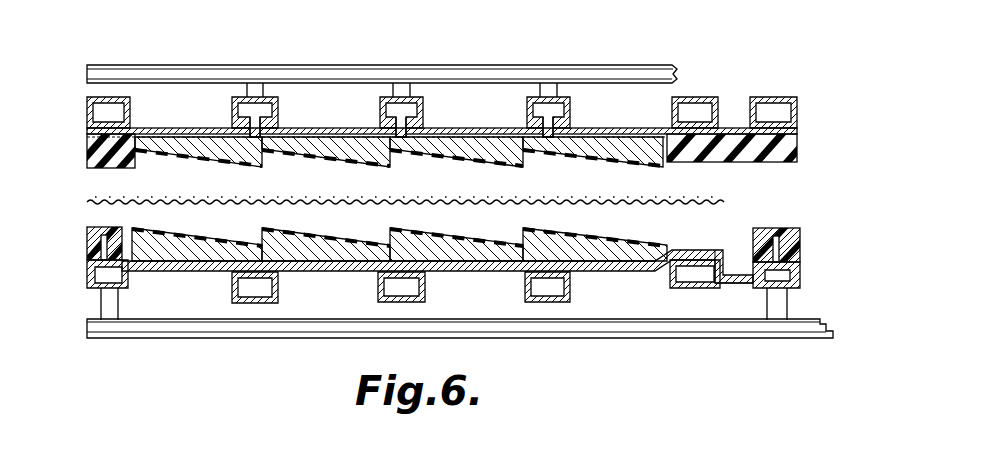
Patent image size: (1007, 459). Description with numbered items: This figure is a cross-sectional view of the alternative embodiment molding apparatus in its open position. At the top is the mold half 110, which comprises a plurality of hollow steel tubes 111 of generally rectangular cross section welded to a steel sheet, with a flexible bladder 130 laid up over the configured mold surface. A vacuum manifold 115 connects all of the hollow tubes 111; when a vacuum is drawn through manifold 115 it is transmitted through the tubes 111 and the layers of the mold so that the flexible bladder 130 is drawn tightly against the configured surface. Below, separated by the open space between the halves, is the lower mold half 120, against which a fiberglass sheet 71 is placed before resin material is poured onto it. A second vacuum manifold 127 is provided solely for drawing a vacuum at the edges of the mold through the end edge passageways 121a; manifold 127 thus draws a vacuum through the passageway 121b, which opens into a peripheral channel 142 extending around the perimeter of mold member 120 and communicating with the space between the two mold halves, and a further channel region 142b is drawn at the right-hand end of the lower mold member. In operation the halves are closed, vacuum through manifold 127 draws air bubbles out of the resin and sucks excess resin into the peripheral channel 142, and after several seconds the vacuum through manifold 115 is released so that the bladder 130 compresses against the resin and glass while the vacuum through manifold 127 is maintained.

The vacuum manifold 115 is at (313, 70).
The mold half 110 is at (425, 127).
The hollow steel tubes 111 is at (279, 114).
The flexible bladder 130 is at (447, 170).
The fiberglass sheet 71 is at (579, 193).
The peripheral channel 142 is at (128, 233).
The recess of lower wedge layer 142b is at (735, 229).
The passageway 121b is at (88, 243).
The end edge passageways 121a is at (88, 276).
The mold half 120 is at (454, 292).
The vacuum manifold 127 is at (540, 331).